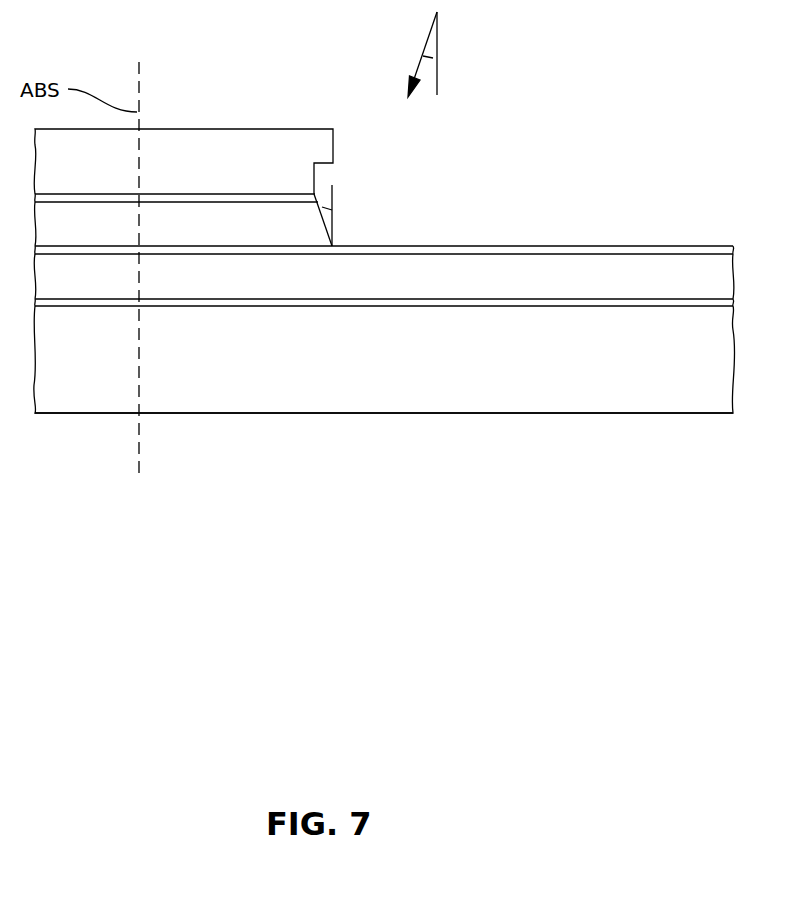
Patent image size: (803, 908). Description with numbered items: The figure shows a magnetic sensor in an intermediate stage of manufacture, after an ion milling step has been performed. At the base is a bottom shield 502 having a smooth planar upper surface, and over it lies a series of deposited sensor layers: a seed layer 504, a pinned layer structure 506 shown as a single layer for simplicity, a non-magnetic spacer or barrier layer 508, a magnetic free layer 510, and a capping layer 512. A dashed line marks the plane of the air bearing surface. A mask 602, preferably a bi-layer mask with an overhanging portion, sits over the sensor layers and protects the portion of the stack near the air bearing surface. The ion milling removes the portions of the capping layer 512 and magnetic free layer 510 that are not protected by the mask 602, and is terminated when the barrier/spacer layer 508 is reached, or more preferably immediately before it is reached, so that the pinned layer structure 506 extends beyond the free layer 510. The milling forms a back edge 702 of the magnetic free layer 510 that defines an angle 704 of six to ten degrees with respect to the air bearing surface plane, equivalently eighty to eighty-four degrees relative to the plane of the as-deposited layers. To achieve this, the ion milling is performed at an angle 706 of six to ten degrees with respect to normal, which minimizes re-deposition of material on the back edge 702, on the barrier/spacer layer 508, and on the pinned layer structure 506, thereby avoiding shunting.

The bottom shield 502 is at (352, 359).
The seed layer 504 is at (608, 302).
The pinned layer structure 506 is at (352, 278).
The barrier/spacer layer 508 is at (612, 251).
The magnetic free layer 510 is at (241, 222).
The capping layer 512 is at (126, 198).
The mask 602 is at (221, 160).
The back edge of the magnetic free layer 702 is at (333, 223).
The angle of the back edge 704 is at (335, 200).
The ion milling angle 706 is at (437, 48).